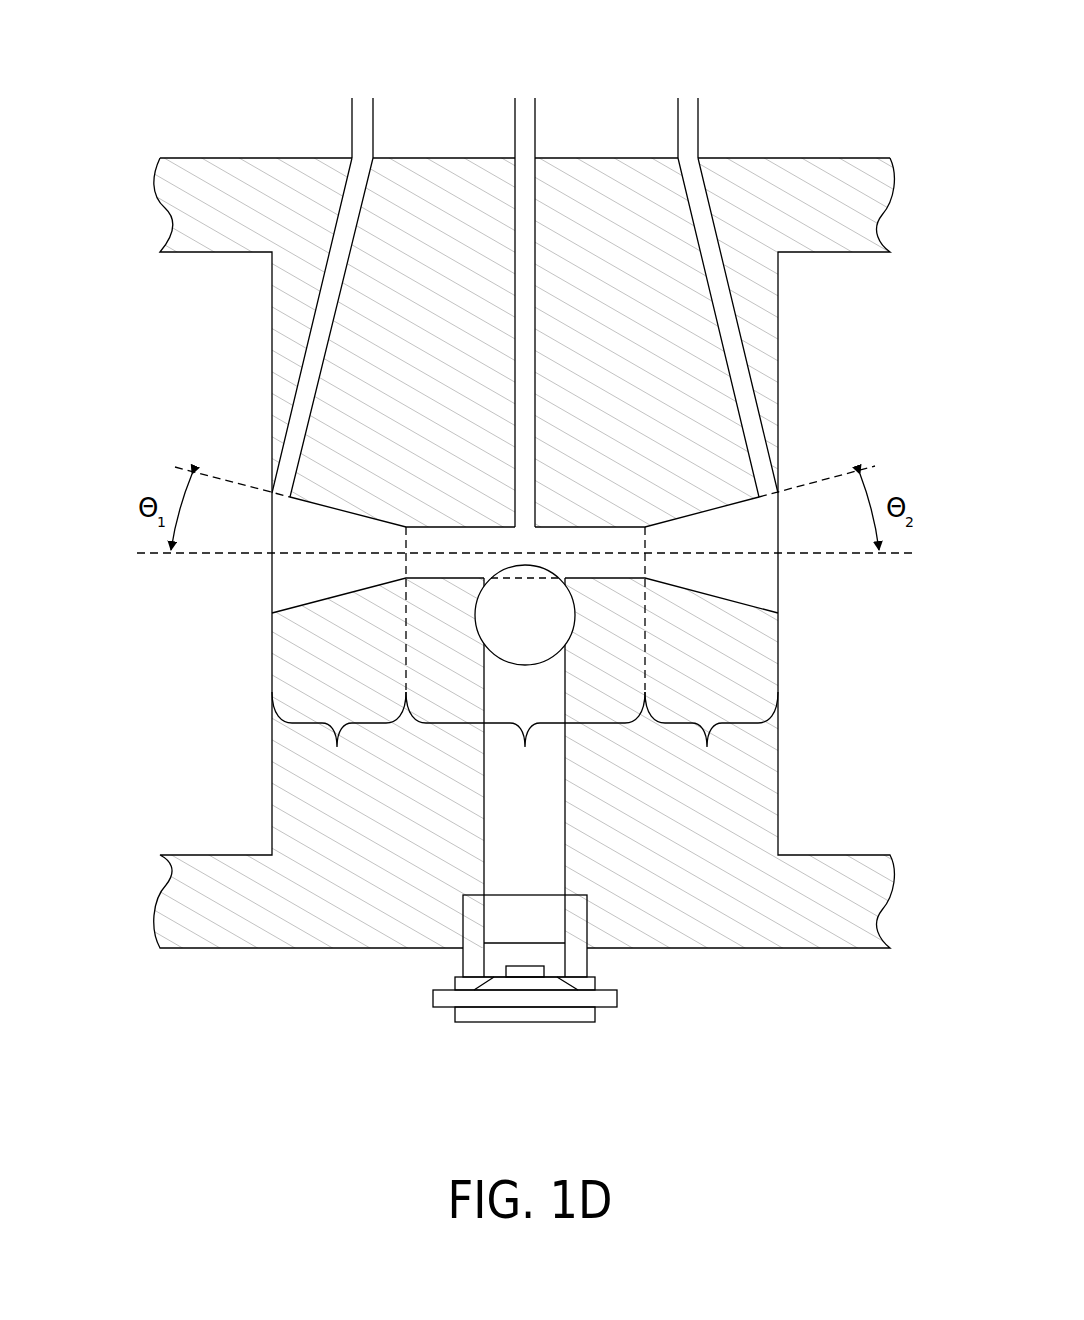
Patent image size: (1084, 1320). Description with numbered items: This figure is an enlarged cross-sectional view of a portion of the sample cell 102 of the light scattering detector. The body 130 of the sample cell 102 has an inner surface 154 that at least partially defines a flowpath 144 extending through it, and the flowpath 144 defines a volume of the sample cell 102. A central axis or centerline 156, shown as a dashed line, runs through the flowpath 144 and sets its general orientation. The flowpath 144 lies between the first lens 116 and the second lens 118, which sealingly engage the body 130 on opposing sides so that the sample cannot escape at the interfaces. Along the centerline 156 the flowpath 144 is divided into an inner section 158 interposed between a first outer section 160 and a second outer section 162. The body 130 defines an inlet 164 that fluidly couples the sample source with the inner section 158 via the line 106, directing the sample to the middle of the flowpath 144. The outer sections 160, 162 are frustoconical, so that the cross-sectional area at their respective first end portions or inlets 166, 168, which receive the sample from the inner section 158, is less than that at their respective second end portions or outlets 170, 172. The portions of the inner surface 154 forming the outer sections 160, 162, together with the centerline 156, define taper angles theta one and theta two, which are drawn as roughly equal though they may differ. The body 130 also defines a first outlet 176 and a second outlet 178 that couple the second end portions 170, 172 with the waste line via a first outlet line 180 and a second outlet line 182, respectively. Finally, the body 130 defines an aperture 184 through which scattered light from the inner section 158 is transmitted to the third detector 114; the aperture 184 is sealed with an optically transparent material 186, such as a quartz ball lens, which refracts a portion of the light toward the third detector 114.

The sample cell 102 is at (802, 953).
The line 106 is at (515, 137).
The third detector 114 is at (630, 998).
The first lens 116 is at (170, 305).
The second lens 118 is at (819, 305).
The body 130 is at (229, 917).
The flowpath 144 is at (272, 760).
The inner surface 154 is at (469, 580).
The centerline 156 is at (162, 553).
The inner section 158 is at (525, 737).
The first outer section 160 is at (339, 737).
The second outer section 162 is at (711, 737).
The inlet 164 is at (535, 202).
The first end portion or inlet of the first outer section 166 is at (394, 518).
The first end portion or inlet of the second outer section 168 is at (661, 518).
The second end portion or outlet of the first outer section 170 is at (292, 620).
The second end portion or outlet of the second outer section 172 is at (753, 620).
The first outlet 176 is at (360, 212).
The second outlet 178 is at (713, 213).
The first outlet line 180 is at (352, 137).
The second outlet line 182 is at (698, 109).
The aperture 184 is at (535, 584).
The optically transparent material 186 is at (549, 643).